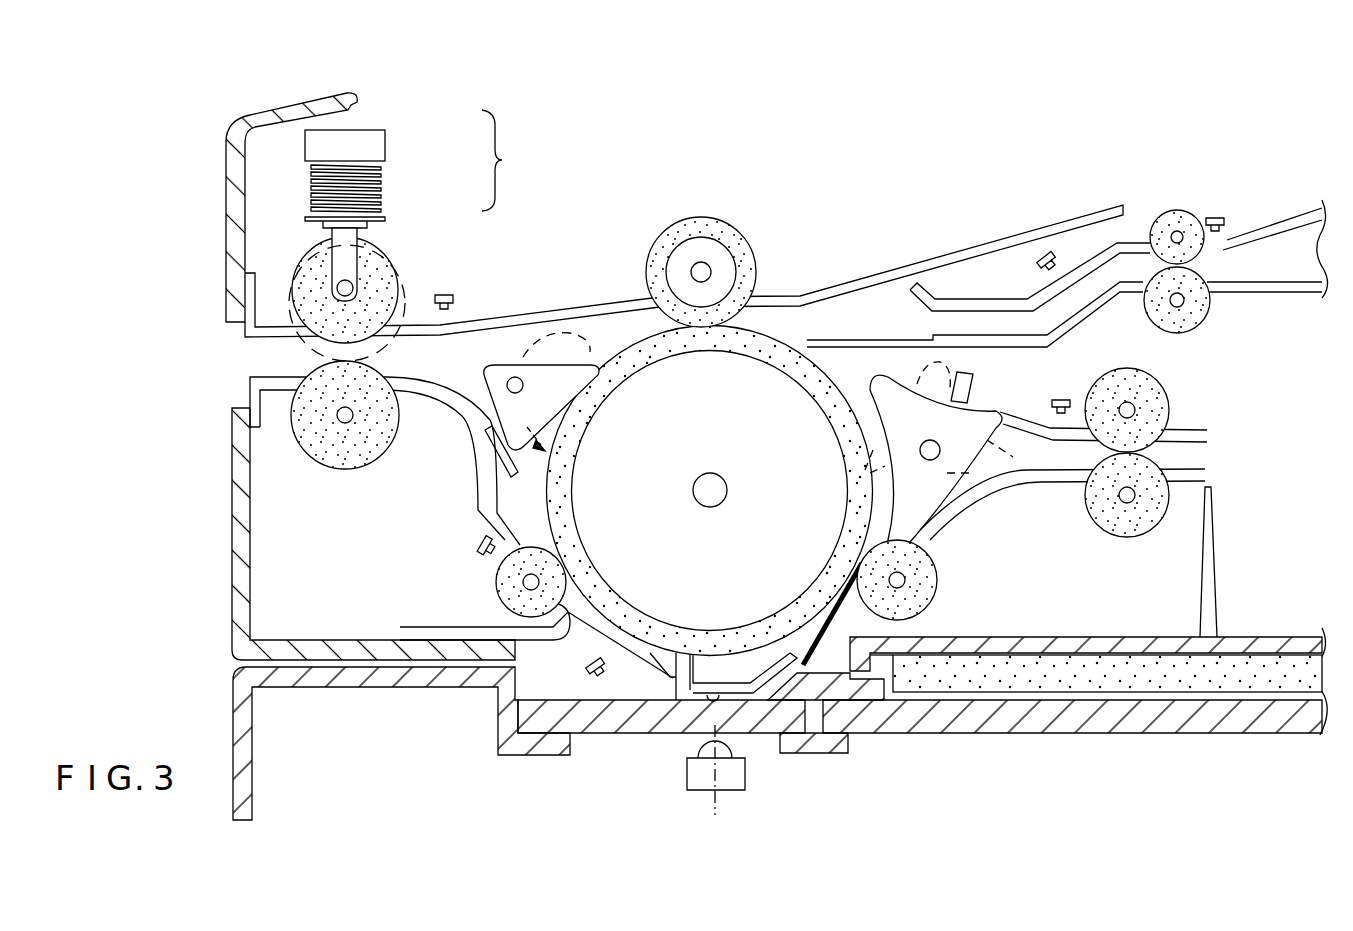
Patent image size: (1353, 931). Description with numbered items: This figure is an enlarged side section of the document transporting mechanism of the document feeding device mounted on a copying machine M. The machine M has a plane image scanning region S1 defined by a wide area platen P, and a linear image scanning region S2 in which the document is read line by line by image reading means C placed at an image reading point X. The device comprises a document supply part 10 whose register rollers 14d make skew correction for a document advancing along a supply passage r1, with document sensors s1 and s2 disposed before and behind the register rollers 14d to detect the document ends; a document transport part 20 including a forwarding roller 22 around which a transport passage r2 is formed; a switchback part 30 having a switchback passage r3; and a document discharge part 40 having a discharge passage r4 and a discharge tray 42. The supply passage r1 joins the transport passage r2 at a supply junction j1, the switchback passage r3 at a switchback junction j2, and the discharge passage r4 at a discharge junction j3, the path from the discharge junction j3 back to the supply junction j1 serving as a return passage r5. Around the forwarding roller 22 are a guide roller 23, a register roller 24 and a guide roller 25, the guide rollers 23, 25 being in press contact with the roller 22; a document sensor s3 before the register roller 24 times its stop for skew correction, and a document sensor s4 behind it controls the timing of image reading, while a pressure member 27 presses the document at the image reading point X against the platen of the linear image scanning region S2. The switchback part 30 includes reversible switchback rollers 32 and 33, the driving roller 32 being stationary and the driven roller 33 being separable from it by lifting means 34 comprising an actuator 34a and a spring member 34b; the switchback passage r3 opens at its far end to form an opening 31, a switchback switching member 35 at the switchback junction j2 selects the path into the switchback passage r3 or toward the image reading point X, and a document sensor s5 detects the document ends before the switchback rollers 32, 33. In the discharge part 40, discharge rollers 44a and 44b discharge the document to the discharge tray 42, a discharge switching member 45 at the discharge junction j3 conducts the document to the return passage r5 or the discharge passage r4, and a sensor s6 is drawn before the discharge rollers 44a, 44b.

The document supply part 10 is at (1262, 197).
The register rollers 14d is at (1183, 218).
The document transport part 20 is at (765, 242).
The forwarding roller 22 is at (655, 377).
The guide roller 23 is at (705, 218).
The register roller 24 is at (500, 572).
The guide roller 25 is at (923, 597).
The pressure member 27 is at (700, 694).
The switchback part 30 is at (534, 192).
The opening 31 is at (263, 357).
The switchback roller 32 is at (330, 463).
The switchback roller 33 is at (293, 258).
The lifting means 34 is at (419, 169).
The actuator 34a is at (380, 150).
The spring member 34b is at (381, 185).
The switchback switching member 35 is at (513, 362).
The document discharge part 40 is at (1310, 497).
The discharge tray 42 is at (1273, 637).
The discharge roller 44a is at (1160, 403).
The discharge roller 44b is at (1168, 522).
The discharge switching member 45 is at (947, 483).
The document sensor s1 is at (1222, 214).
The document sensor s2 is at (1044, 256).
The document sensor s3 is at (479, 548).
The document sensor s4 is at (533, 677).
The document sensor s5 is at (454, 298).
The sensor s6 is at (1058, 393).
The supply passage r1 is at (993, 323).
The transport passage r2 is at (520, 493).
The switchback passage r3 is at (420, 350).
The discharge passage r4 is at (1070, 457).
The return passage r5 is at (862, 372).
The supply junction j1 is at (790, 327).
The switchback junction j2 is at (547, 333).
The discharge junction j3 is at (980, 487).
The plane image scanning region S1 is at (1040, 750).
The linear image scanning region S2 is at (781, 773).
The platen P is at (1140, 733).
The copying machine M is at (1238, 752).
The image reading point X is at (714, 784).
The image reading means C is at (766, 843).